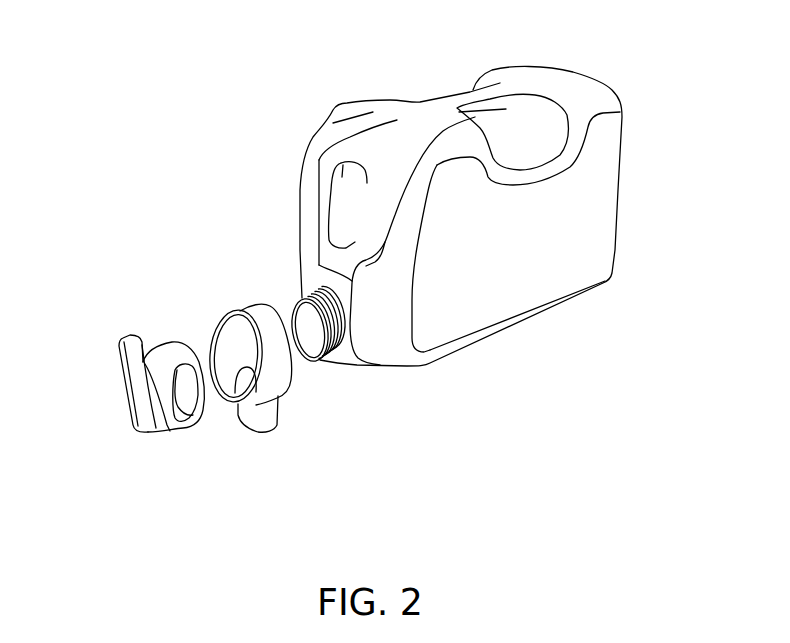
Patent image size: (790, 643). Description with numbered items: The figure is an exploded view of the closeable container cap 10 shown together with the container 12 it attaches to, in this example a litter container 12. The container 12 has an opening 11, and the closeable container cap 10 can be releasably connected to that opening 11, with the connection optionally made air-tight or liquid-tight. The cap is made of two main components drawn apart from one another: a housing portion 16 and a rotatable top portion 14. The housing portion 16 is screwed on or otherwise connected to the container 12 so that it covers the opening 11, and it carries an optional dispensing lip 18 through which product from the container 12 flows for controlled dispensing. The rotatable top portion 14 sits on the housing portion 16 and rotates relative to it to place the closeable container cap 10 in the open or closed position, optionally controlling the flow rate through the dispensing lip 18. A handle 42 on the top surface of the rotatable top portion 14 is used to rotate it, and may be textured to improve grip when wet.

The closeable container cap 10 is at (124, 248).
The litter container 12 is at (373, 100).
The opening 11 is at (313, 347).
The housing portion 16 is at (240, 309).
The dispensing lip 18 is at (280, 418).
The rotatable top portion 14 is at (163, 435).
The handle 42 is at (127, 370).